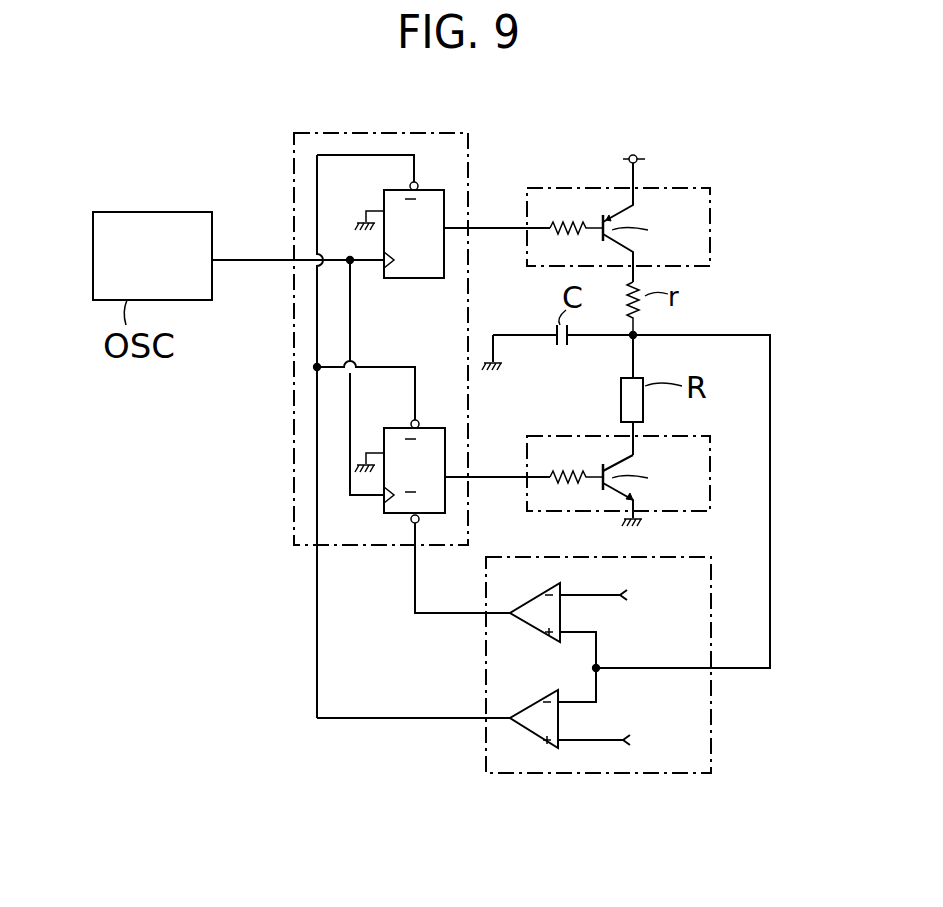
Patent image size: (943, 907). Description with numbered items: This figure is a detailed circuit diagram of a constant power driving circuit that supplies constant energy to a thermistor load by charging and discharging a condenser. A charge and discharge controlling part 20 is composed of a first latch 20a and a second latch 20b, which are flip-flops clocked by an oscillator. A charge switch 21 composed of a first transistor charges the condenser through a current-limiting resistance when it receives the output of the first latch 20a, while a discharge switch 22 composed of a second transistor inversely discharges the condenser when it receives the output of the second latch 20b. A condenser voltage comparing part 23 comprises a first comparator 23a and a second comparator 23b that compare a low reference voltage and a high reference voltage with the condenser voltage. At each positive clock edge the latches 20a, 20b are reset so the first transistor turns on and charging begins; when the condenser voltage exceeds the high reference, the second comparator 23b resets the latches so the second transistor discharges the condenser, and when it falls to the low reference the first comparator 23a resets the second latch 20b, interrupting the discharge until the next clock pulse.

The charge and discharge controlling part 20 is at (323, 131).
The first latch 20a is at (436, 190).
The second latch 20b is at (395, 513).
The charge switch 21 is at (712, 205).
The discharge switch 22 is at (712, 468).
The condenser voltage comparing part 23 is at (555, 679).
The first comparator 23a is at (545, 583).
The second comparator 23b is at (527, 735).